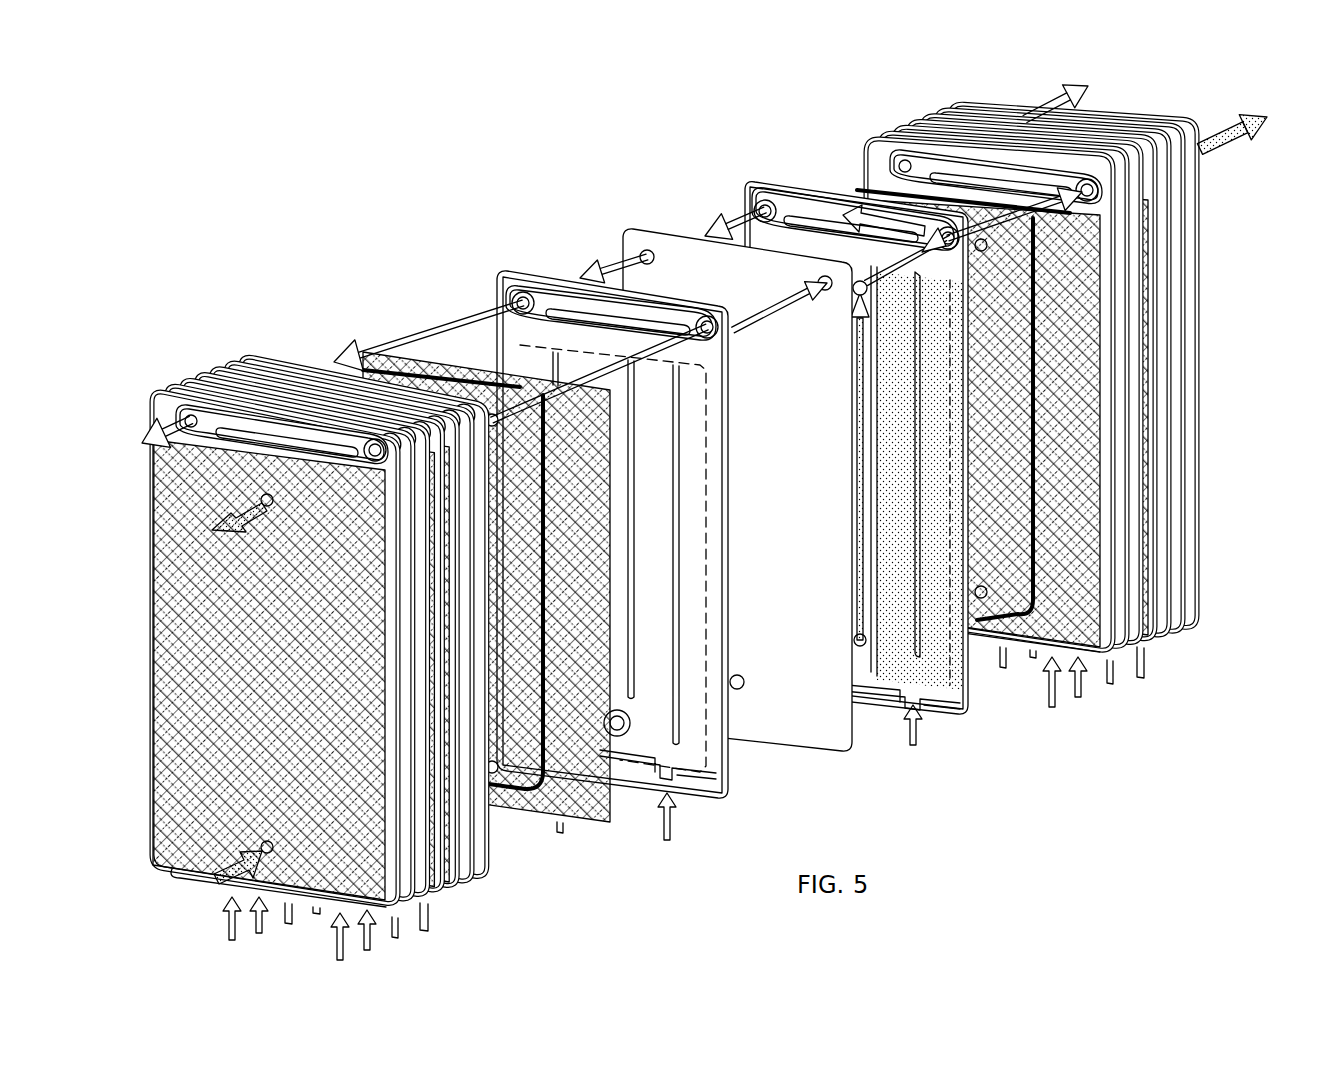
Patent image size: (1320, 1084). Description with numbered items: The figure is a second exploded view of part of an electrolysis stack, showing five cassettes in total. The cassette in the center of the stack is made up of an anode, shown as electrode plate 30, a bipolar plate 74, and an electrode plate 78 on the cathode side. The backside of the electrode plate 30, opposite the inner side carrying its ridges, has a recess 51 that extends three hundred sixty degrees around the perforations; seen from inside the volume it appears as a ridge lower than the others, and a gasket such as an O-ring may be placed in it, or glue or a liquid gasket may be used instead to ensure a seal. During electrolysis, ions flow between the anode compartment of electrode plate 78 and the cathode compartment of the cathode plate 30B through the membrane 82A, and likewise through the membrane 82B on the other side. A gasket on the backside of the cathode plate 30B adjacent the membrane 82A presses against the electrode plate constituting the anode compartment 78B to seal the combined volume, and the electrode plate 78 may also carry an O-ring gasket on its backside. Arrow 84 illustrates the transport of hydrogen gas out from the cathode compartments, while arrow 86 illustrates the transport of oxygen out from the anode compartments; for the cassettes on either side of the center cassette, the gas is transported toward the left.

The electrode plate 30 is at (533, 273).
The cathode plate 30B is at (927, 178).
The recess 51 is at (412, 348).
The bipolar plate 74 is at (653, 226).
The electrode plate 78 is at (745, 181).
The anode compartment 78B is at (290, 362).
The membrane 82A is at (403, 353).
The membrane 82B is at (873, 183).
The arrow 84 is at (730, 205).
The arrow 86 is at (470, 380).